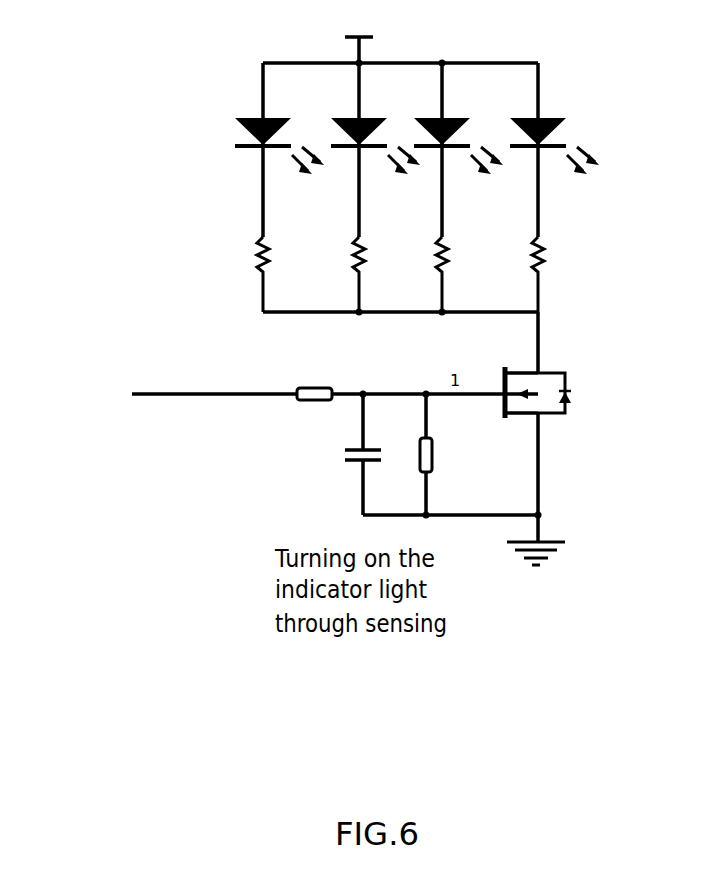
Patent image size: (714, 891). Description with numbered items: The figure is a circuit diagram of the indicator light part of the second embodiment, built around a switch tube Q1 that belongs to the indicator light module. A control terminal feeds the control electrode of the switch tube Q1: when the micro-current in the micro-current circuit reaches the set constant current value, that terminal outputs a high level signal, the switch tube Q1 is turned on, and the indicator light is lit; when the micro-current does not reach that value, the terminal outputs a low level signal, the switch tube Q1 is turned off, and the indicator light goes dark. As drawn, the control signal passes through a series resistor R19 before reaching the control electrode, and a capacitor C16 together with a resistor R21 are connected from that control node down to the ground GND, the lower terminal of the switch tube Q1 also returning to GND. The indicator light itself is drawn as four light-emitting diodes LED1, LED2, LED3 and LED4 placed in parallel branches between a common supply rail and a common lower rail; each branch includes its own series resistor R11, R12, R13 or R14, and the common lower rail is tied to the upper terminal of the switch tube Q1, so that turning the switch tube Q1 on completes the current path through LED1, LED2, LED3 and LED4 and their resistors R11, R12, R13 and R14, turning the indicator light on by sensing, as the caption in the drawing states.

The light emitting diode LED1 is at (285, 150).
The light emitting diode LED2 is at (381, 150).
The light emitting diode LED3 is at (463, 150).
The light emitting diode LED4 is at (560, 150).
The resistor R11 is at (283, 270).
The resistor R12 is at (379, 270).
The resistor R13 is at (462, 270).
The resistor R14 is at (558, 270).
The resistor R19 is at (321, 379).
The capacitor C16 is at (338, 454).
The resistor R21 is at (446, 454).
The switch tube Q1 is at (553, 427).
The ground net GND is at (536, 569).